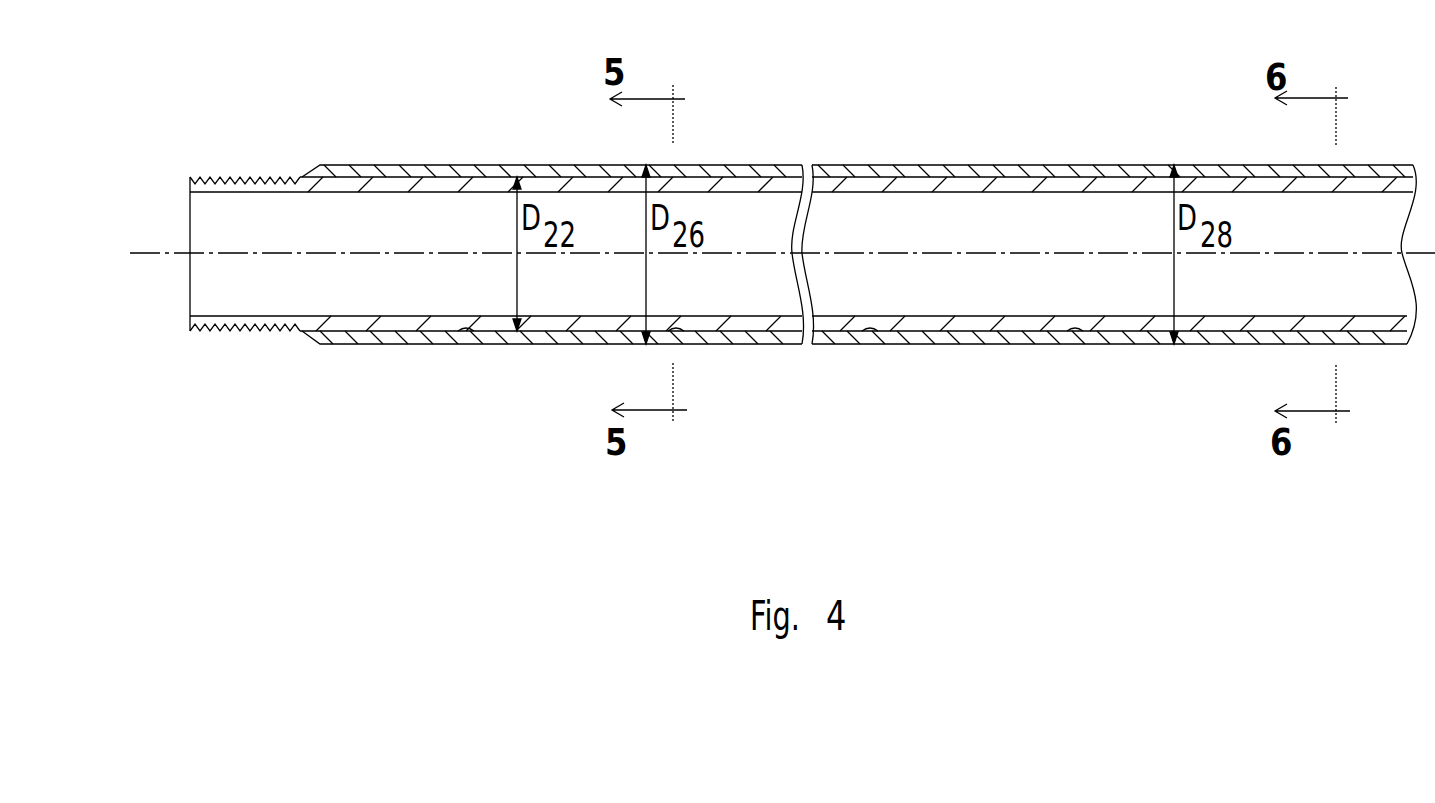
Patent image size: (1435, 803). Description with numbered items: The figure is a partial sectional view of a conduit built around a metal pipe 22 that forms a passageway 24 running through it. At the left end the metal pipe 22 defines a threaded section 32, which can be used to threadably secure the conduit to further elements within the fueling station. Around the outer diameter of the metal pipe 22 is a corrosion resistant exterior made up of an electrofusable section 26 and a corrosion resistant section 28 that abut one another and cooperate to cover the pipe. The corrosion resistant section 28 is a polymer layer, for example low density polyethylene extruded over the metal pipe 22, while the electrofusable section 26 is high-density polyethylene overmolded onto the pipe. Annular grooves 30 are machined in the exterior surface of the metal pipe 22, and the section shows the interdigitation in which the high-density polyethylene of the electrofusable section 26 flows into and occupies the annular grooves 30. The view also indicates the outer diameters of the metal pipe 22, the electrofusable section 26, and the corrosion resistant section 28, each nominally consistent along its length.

The metal pipe 22 is at (340, 183).
The passageway 24 is at (208, 282).
The electrofusable section 26 is at (975, 168).
The corrosion resistant section 28 is at (1203, 166).
The annular groove 30 is at (468, 335).
The threaded section 32 is at (241, 343).